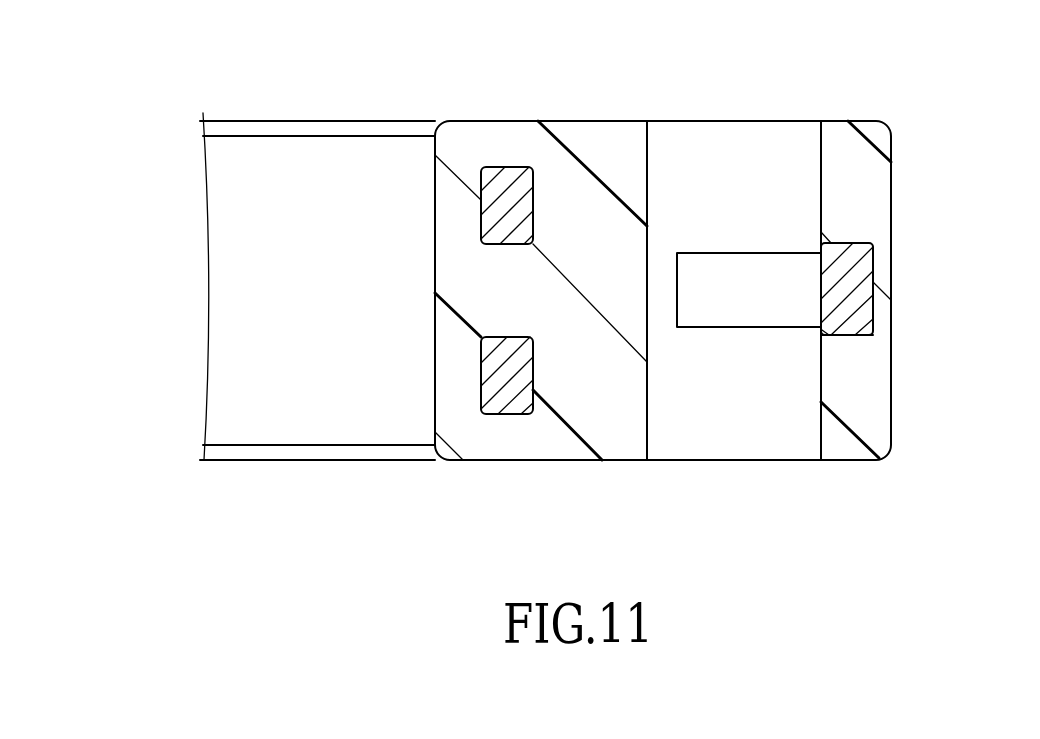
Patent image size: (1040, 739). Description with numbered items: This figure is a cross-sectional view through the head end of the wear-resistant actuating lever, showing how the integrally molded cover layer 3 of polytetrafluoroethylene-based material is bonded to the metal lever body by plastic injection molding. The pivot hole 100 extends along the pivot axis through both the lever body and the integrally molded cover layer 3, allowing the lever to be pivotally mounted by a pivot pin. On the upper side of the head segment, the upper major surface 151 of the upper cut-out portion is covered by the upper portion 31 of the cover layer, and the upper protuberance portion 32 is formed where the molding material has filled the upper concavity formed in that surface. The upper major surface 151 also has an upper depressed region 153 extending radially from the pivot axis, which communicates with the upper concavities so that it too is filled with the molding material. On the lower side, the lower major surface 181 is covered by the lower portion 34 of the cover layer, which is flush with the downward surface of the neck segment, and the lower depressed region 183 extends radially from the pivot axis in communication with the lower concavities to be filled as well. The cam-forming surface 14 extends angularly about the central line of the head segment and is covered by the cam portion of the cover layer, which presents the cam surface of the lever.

The integrally molded cover layer 3 is at (907, 130).
The cam-forming surface 14 is at (481, 207).
The upper portion 31 is at (594, 135).
The upper protuberance portion 32 is at (455, 378).
The lower portion 34 is at (619, 430).
The pivot hole 100 is at (751, 153).
The upper major surface 151 is at (510, 167).
The upper depressed region 153 is at (855, 243).
The lower major surface 181 is at (503, 414).
The lower depressed region 183 is at (851, 336).